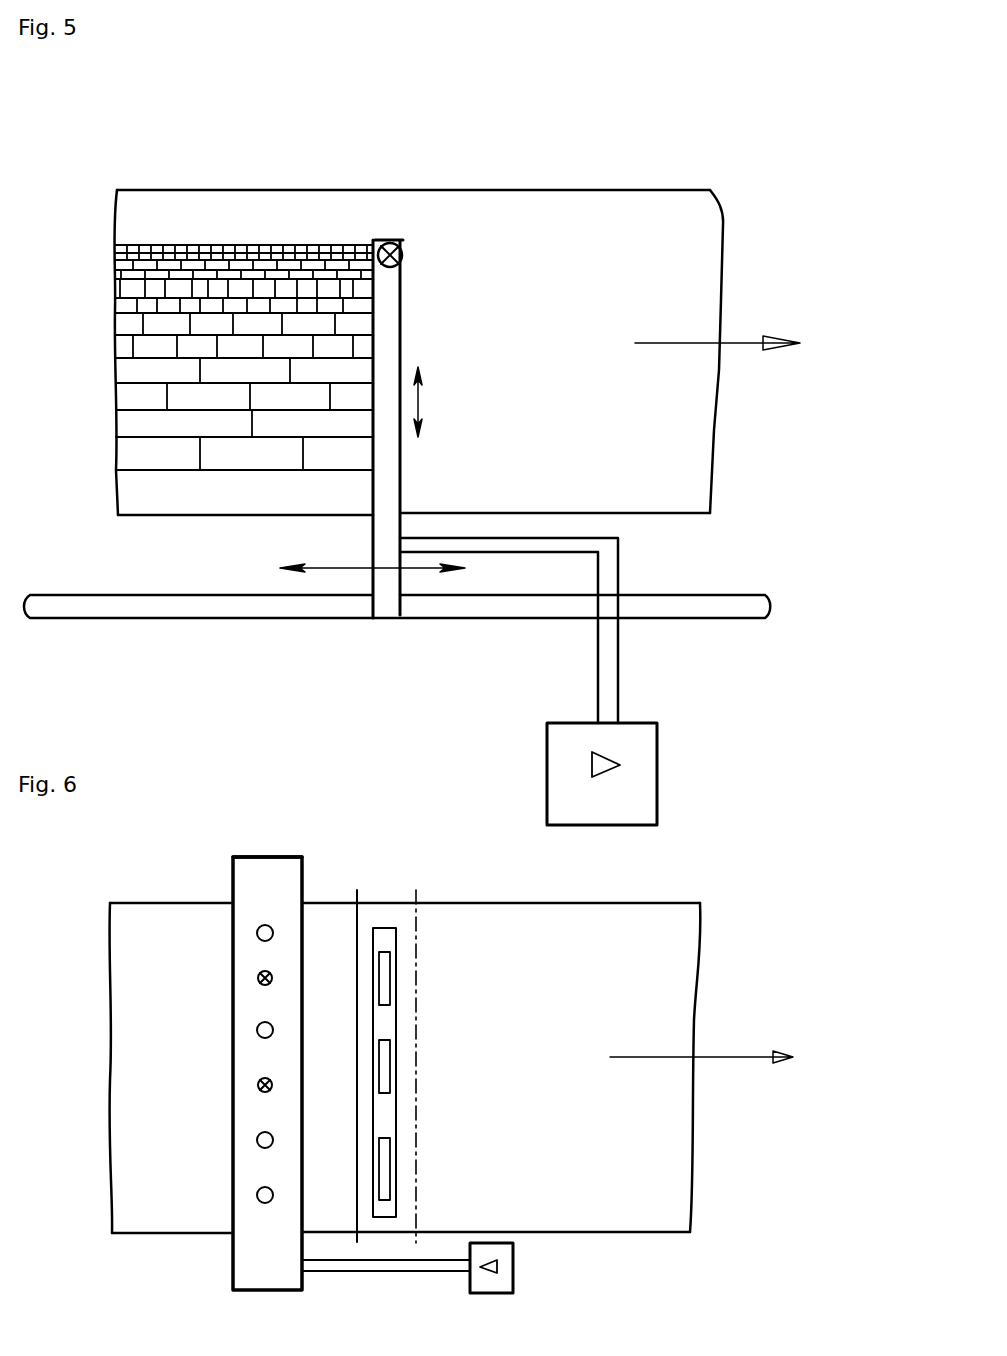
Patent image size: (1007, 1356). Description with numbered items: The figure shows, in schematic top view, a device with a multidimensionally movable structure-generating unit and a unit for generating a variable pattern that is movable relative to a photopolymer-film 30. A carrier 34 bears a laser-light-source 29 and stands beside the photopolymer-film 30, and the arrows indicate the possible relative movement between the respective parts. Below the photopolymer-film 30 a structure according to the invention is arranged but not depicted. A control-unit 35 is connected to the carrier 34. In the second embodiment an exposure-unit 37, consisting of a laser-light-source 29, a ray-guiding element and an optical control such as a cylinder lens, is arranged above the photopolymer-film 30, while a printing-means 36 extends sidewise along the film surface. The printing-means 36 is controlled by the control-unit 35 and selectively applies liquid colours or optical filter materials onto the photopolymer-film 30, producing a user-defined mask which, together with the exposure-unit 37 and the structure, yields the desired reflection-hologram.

In FIG. 5, the laser-light-source 29 is at (407, 250).
In FIG. 6, the laser-light-source 29 is at (257, 937).
In FIG. 5, the photopolymer-film 30 is at (597, 410).
In FIG. 6, the photopolymer-film 30 is at (451, 1066).
In FIG. 5, the carrier 34 is at (387, 590).
In FIG. 6, the carrier 34 is at (247, 1262).
In FIG. 5, the control-unit 35 is at (635, 737).
In FIG. 6, the control-unit 35 is at (517, 1260).
In FIG. 6, the printing-means 36 is at (417, 977).
In FIG. 6, the exposure-unit 37 is at (285, 882).